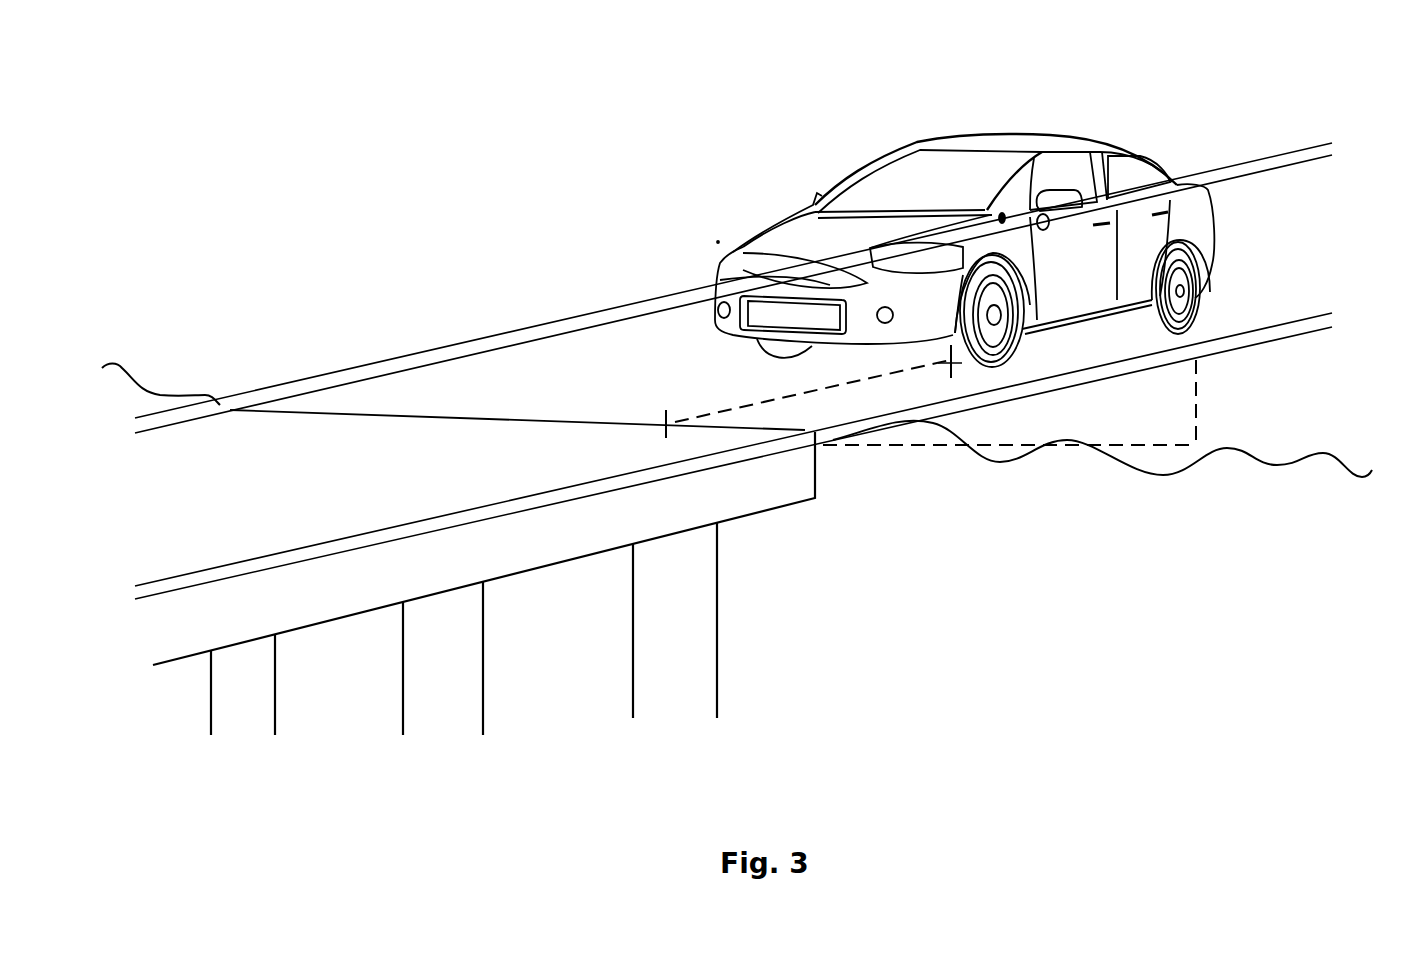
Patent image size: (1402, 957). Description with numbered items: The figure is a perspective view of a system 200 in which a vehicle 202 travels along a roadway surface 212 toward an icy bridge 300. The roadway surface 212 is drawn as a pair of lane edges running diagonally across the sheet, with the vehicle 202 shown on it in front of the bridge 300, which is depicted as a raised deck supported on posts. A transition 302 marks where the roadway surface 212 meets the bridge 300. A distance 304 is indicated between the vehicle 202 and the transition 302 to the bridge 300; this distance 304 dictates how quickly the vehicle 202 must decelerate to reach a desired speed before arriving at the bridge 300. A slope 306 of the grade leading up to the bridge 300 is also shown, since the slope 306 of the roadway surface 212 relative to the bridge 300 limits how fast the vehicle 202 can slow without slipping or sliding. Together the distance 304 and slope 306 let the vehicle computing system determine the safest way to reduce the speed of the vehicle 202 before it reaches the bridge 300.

The system 200 is at (614, 115).
The vehicle 202 is at (947, 192).
The roadway surface 212 is at (1298, 264).
The bridge 300 is at (306, 479).
The transition 302 is at (538, 409).
The distance 304 is at (745, 403).
The slope 306 is at (958, 413).